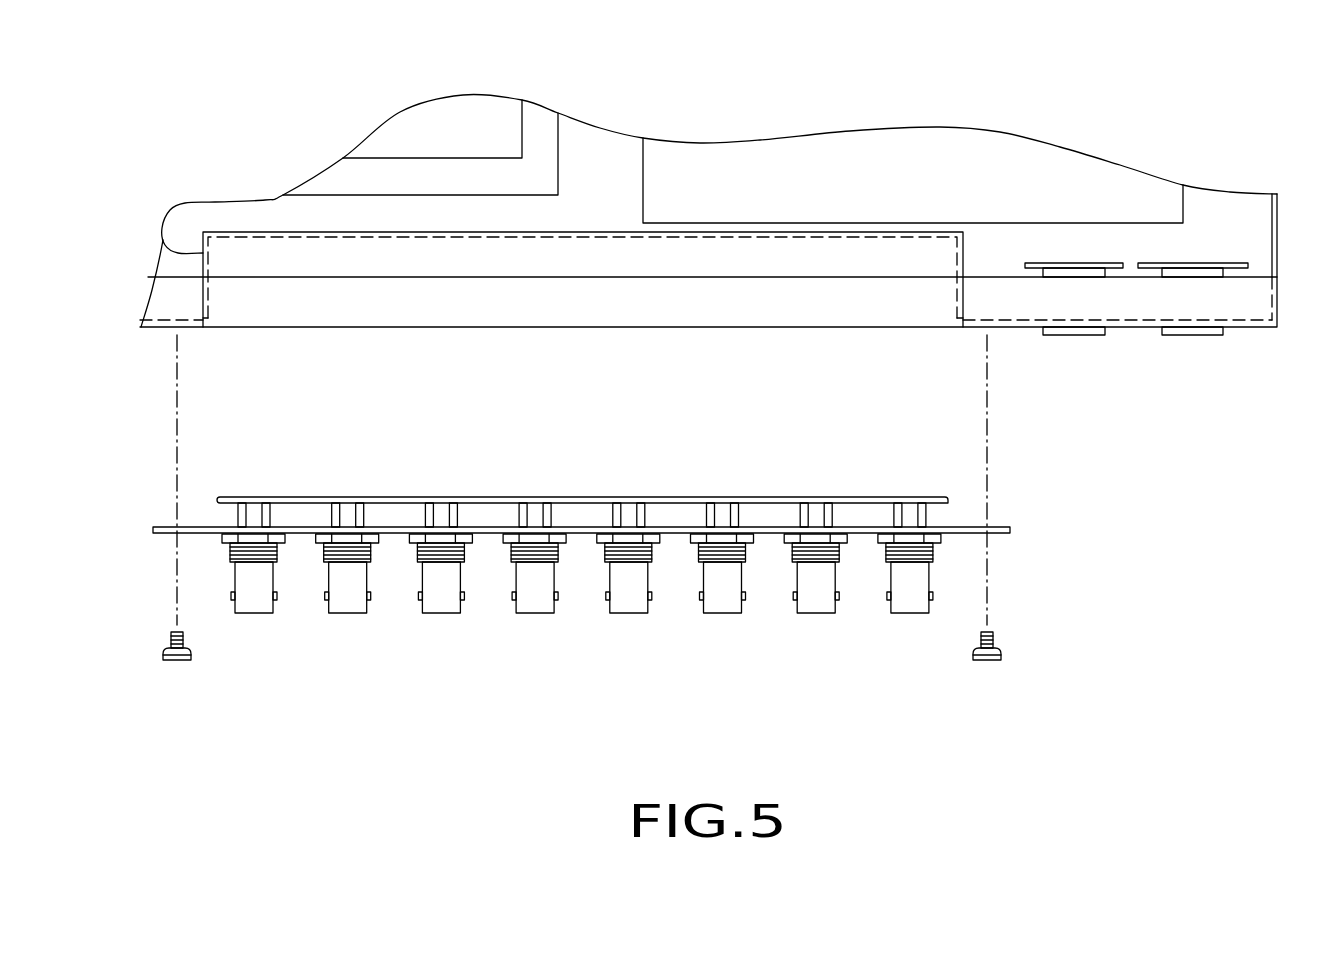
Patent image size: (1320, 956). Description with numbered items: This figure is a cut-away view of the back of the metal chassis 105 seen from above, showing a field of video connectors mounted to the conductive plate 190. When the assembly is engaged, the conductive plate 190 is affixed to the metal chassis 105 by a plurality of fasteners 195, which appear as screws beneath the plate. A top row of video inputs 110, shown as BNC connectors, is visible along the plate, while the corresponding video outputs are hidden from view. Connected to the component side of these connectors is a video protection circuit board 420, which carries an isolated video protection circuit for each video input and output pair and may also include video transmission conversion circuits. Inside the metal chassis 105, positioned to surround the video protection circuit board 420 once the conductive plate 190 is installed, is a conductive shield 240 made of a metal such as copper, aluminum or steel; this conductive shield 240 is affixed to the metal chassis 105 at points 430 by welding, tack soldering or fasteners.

The metal chassis 105 is at (1250, 330).
The conductive shield 240 is at (163, 240).
The points 430 is at (197, 316).
The video protection circuit board 420 is at (682, 497).
The conductive plate 190 is at (1008, 534).
The video inputs 110 is at (913, 612).
The fasteners 195 is at (191, 652).